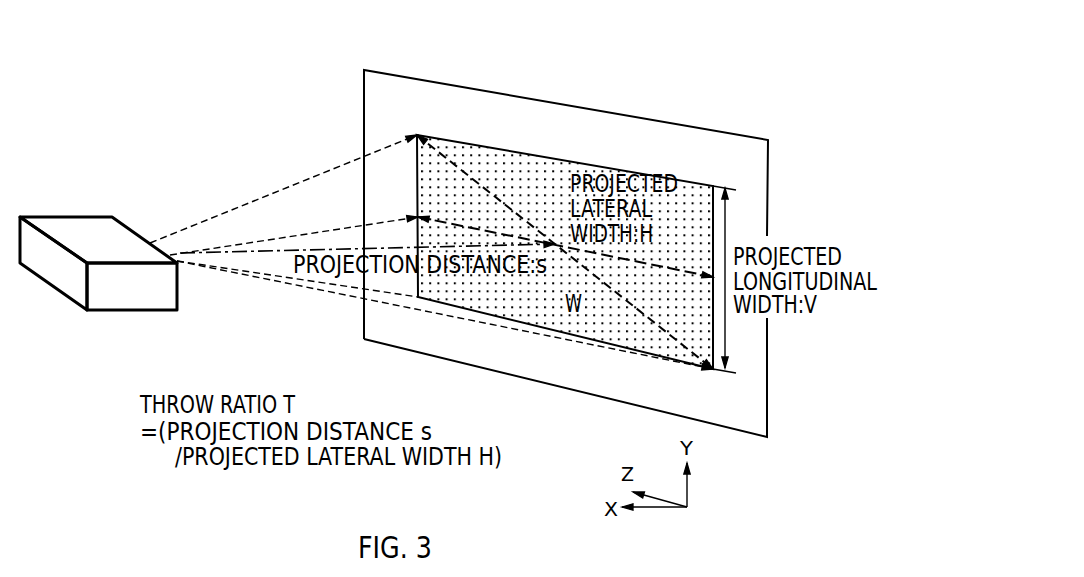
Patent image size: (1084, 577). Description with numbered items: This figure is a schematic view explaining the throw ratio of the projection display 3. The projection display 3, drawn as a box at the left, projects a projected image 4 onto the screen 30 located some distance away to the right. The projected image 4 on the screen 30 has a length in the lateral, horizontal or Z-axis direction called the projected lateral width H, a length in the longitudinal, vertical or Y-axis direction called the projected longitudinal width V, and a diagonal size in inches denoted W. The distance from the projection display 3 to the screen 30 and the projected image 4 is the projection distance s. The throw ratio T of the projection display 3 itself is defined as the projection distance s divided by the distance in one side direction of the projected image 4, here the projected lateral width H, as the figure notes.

The projection display 3 is at (74, 217).
The screen 30 is at (407, 77).
The projected image 4 is at (437, 138).